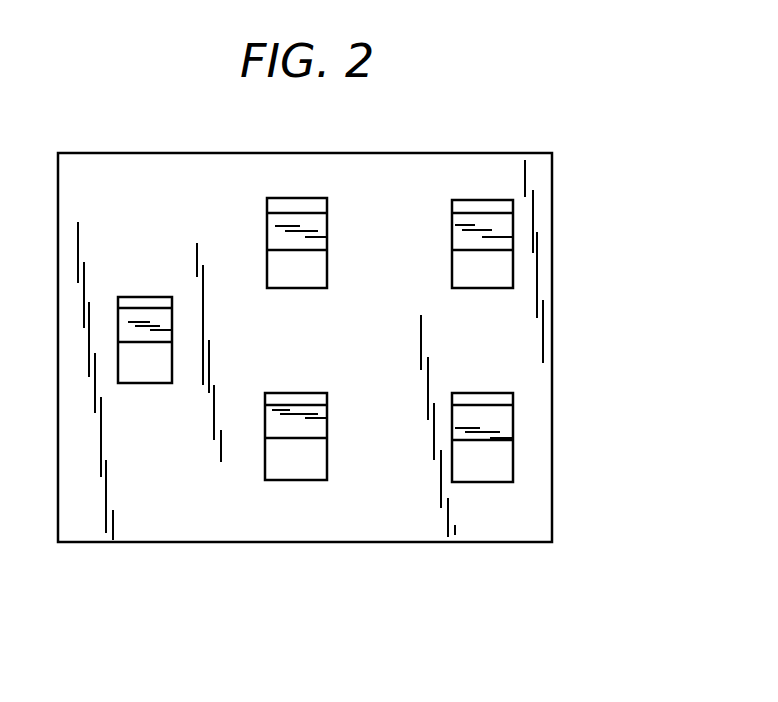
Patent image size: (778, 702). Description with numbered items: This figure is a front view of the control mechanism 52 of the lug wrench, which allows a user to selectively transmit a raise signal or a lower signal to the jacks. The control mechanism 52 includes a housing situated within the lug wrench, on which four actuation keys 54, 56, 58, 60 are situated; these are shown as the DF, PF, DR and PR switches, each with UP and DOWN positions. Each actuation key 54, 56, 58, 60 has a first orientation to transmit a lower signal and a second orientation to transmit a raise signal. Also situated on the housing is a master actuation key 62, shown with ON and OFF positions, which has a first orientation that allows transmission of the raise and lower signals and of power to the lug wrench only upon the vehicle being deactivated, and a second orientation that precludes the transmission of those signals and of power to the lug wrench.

The control mechanism 52 is at (552, 356).
The actuation key 54 is at (267, 255).
The actuation key 56 is at (513, 266).
The actuation key 58 is at (265, 462).
The actuation key 60 is at (513, 458).
The master actuation key 62 is at (172, 338).